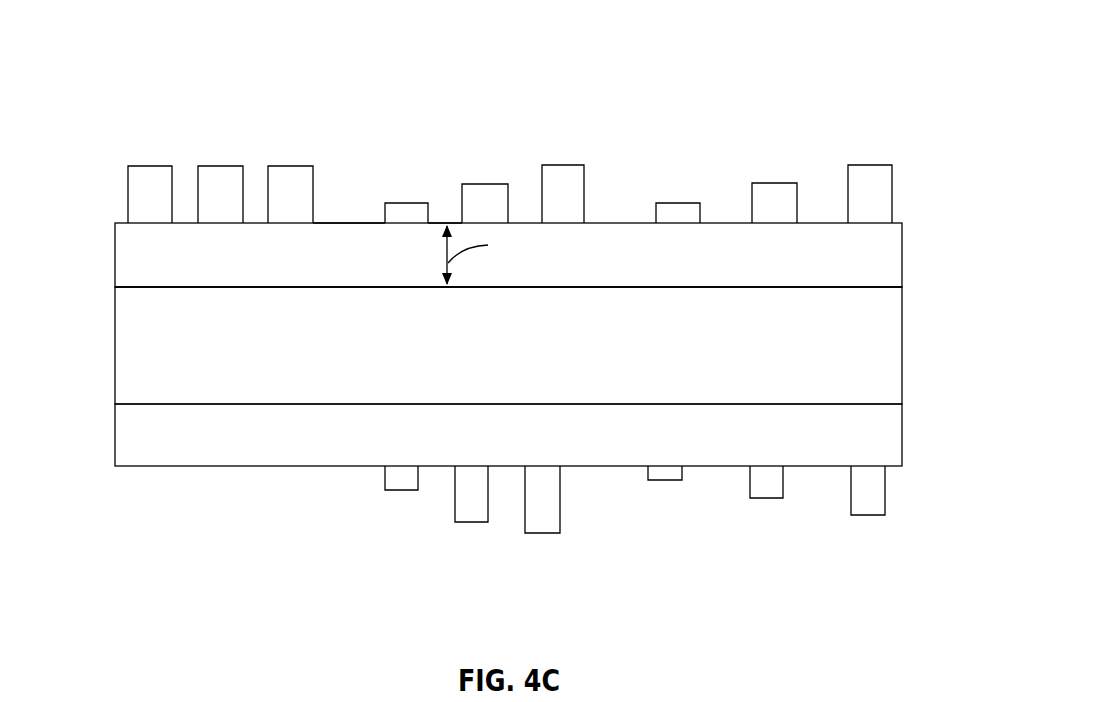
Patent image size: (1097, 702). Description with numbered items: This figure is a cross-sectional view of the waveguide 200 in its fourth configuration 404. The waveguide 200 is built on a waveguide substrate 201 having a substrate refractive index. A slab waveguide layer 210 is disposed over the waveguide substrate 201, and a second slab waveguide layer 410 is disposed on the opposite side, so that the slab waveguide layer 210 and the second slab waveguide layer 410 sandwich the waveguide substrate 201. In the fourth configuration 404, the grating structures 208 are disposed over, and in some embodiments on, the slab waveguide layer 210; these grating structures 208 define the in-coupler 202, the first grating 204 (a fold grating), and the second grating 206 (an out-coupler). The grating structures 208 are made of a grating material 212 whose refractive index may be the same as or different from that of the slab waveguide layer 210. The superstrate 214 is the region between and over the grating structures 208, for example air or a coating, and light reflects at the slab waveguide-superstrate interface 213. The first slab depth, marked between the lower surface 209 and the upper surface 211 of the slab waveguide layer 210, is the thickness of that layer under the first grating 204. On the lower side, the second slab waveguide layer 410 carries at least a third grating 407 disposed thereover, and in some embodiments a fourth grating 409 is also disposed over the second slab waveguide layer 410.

The waveguide 200 is at (874, 26).
The waveguide substrate 201 is at (746, 345).
The in-coupler 202 is at (313, 130).
The first grating 204 is at (575, 128).
The second grating 206 is at (900, 133).
The grating structures 208 is at (147, 205).
The lower surface 209 is at (447, 289).
The slab waveguide layer 210 is at (754, 270).
The upper surface 211 is at (447, 222).
The grating material 212 is at (873, 197).
The slab waveguide-superstrate interface 213 is at (347, 220).
The superstrate 214 is at (524, 155).
The fourth configuration 404 is at (106, 160).
The third grating 407 is at (560, 543).
The fourth grating 409 is at (648, 537).
The second slab waveguide layer 410 is at (746, 448).